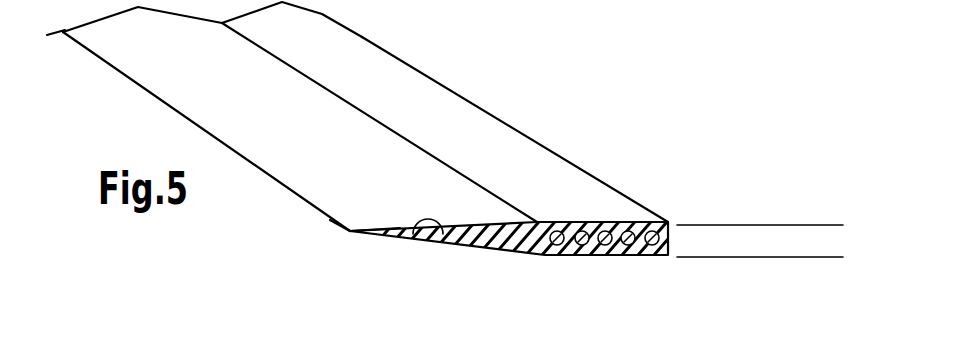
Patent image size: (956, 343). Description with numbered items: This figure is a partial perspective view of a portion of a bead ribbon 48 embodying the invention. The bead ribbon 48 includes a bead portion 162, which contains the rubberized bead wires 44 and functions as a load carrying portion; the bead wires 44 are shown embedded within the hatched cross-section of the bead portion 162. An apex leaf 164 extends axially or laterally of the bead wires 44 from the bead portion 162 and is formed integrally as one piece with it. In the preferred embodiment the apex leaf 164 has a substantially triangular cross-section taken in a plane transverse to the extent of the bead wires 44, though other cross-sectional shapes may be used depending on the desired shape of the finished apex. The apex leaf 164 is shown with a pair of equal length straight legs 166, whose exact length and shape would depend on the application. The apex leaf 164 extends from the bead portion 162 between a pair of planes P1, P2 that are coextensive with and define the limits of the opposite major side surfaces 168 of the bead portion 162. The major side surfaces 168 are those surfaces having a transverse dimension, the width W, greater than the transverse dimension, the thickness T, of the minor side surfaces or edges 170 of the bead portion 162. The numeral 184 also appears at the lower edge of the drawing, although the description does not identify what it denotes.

The bead ribbon 48 is at (562, 158).
The major side surfaces 168 is at (320, 13).
The bead portion 162 is at (607, 203).
The apex leaf 164 is at (383, 203).
The legs 166 is at (413, 233).
The minor side surfaces 170 is at (507, 256).
The rubberized bead wires 44 is at (565, 255).
The lower surface 184 is at (353, 335).
The width W is at (450, 90).
The thickness T is at (768, 193).
The plane P1 is at (807, 225).
The plane P2 is at (790, 258).